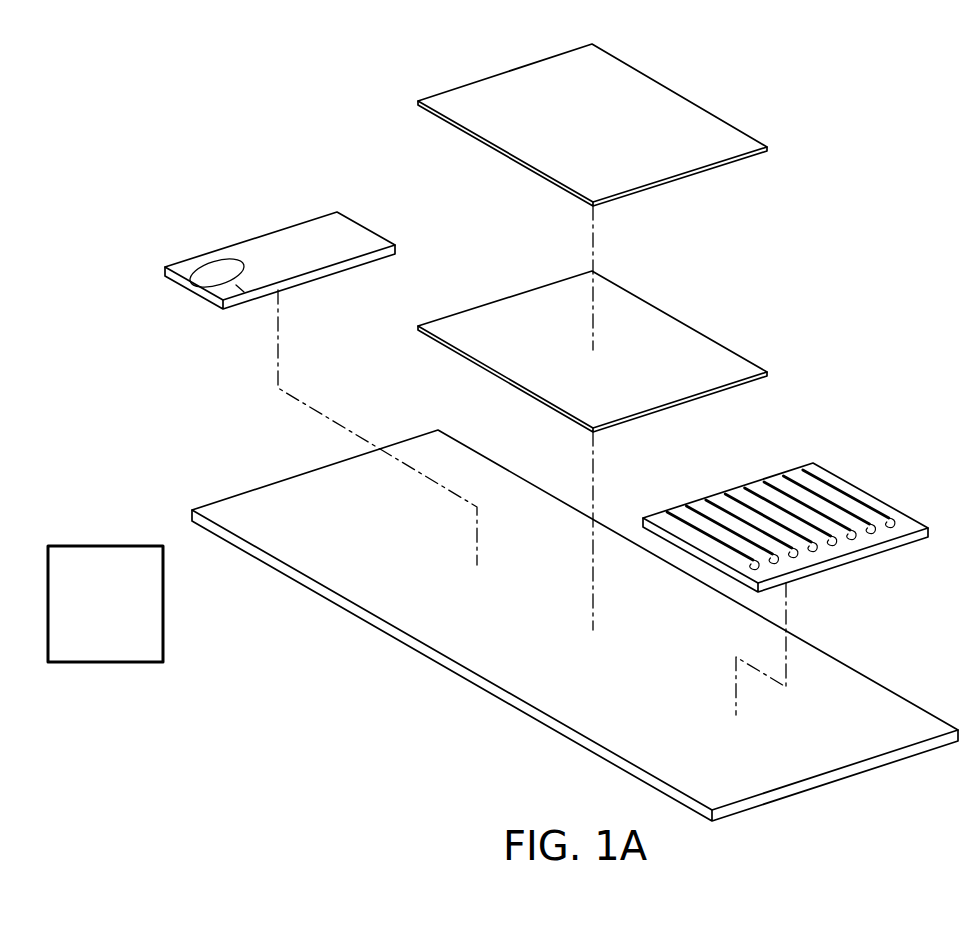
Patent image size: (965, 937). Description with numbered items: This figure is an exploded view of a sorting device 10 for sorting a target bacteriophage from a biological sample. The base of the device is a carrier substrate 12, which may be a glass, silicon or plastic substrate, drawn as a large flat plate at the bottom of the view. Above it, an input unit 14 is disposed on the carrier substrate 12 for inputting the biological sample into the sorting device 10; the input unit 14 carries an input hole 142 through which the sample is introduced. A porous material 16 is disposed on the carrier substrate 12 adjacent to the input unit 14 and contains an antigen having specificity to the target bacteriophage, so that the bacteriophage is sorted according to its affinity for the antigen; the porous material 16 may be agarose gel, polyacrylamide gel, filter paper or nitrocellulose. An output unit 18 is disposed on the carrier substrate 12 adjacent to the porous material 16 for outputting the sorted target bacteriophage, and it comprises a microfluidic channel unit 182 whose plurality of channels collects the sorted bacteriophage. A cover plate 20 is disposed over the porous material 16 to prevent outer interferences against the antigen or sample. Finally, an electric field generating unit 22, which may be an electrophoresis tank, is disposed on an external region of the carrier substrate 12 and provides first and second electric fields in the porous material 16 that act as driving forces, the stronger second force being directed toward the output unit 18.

The sorting device 10 is at (116, 61).
The carrier substrate 12 is at (240, 510).
The input unit 14 is at (316, 358).
The input hole 142 is at (212, 268).
The porous material 16 is at (700, 358).
The output unit 18 is at (804, 563).
The microfluidic channel unit 182 is at (840, 495).
The cover plate 20 is at (700, 133).
The electric field generating unit 22 is at (124, 618).